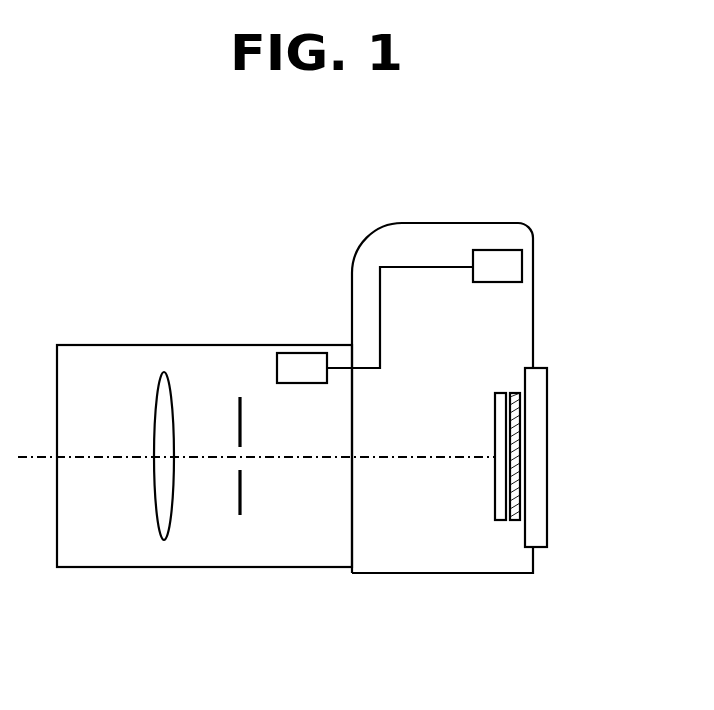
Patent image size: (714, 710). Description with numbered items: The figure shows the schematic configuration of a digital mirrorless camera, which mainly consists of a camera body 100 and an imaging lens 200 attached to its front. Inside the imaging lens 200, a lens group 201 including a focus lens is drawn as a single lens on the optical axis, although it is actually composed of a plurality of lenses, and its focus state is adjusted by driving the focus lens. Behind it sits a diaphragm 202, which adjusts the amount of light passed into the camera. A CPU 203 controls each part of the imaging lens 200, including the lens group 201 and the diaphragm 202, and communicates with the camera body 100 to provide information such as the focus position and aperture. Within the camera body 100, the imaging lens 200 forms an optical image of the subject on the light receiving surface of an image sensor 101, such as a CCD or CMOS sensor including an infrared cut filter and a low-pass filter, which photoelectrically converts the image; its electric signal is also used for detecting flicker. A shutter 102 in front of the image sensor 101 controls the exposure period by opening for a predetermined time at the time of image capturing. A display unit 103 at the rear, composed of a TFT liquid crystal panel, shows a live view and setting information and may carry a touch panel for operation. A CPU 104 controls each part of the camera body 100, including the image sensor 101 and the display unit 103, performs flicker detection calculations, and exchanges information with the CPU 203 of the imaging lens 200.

The camera body 100 is at (383, 230).
The image sensor 101 is at (512, 520).
The shutter 102 is at (499, 520).
The display unit 103 is at (547, 463).
The CPU 104 is at (522, 266).
The imaging lens 200 is at (118, 345).
The lens group 201 is at (164, 540).
The diaphragm 202 is at (240, 505).
The CPU 203 is at (297, 353).